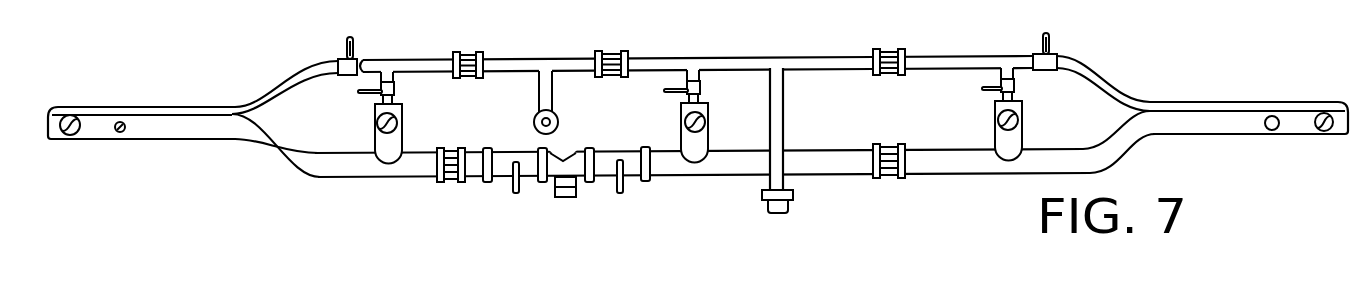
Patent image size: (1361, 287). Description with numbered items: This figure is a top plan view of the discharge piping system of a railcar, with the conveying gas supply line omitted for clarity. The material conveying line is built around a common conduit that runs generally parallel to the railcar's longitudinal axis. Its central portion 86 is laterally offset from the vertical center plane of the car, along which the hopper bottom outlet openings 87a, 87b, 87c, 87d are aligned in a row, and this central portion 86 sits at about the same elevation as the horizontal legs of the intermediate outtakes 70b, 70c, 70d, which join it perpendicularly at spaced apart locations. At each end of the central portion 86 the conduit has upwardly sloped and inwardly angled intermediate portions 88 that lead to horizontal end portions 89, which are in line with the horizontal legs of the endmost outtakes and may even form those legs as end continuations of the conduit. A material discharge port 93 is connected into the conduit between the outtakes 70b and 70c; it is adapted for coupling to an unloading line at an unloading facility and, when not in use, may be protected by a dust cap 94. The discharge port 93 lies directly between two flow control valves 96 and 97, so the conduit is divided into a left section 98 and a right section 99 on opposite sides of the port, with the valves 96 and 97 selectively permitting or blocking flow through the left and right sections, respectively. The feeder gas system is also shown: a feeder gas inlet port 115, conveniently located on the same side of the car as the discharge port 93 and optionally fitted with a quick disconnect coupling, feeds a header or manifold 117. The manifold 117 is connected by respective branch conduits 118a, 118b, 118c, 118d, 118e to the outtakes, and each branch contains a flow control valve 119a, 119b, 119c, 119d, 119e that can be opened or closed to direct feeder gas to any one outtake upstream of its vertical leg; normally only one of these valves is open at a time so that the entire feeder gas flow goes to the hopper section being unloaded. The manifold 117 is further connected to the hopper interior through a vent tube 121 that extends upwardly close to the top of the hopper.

The intermediate outtake 70b is at (380, 137).
The intermediate outtake 70c is at (682, 135).
The intermediate outtake 70d is at (997, 135).
The central portion 86 is at (731, 178).
The hopper bottom outlet opening 87a is at (60, 136).
The hopper bottom outlet opening 87b is at (398, 126).
The hopper bottom outlet opening 87c is at (708, 126).
The hopper bottom outlet opening 87d is at (1022, 116).
The intermediate portion 88 is at (262, 157).
The end portion 89 is at (155, 142).
The material discharge port 93 is at (579, 166).
The dust cap 94 is at (571, 198).
The flow control valve 96 is at (500, 171).
The flow control valve 97 is at (630, 172).
The left section 98 is at (290, 177).
The right section 99 is at (964, 176).
The feeder gas inlet port 115 is at (795, 198).
The manifold 117 is at (786, 58).
The branch conduit 118a is at (270, 94).
The branch conduit 118b is at (396, 80).
The branch conduit 118c is at (712, 76).
The branch conduit 118d is at (1000, 78).
The branch conduit 118e is at (1120, 85).
The flow control valve 119a is at (339, 58).
The flow control valve 119b is at (373, 95).
The flow control valve 119c is at (683, 88).
The flow control valve 119d is at (990, 89).
The flow control valve 119e is at (1050, 57).
The vent tube 121 is at (557, 122).